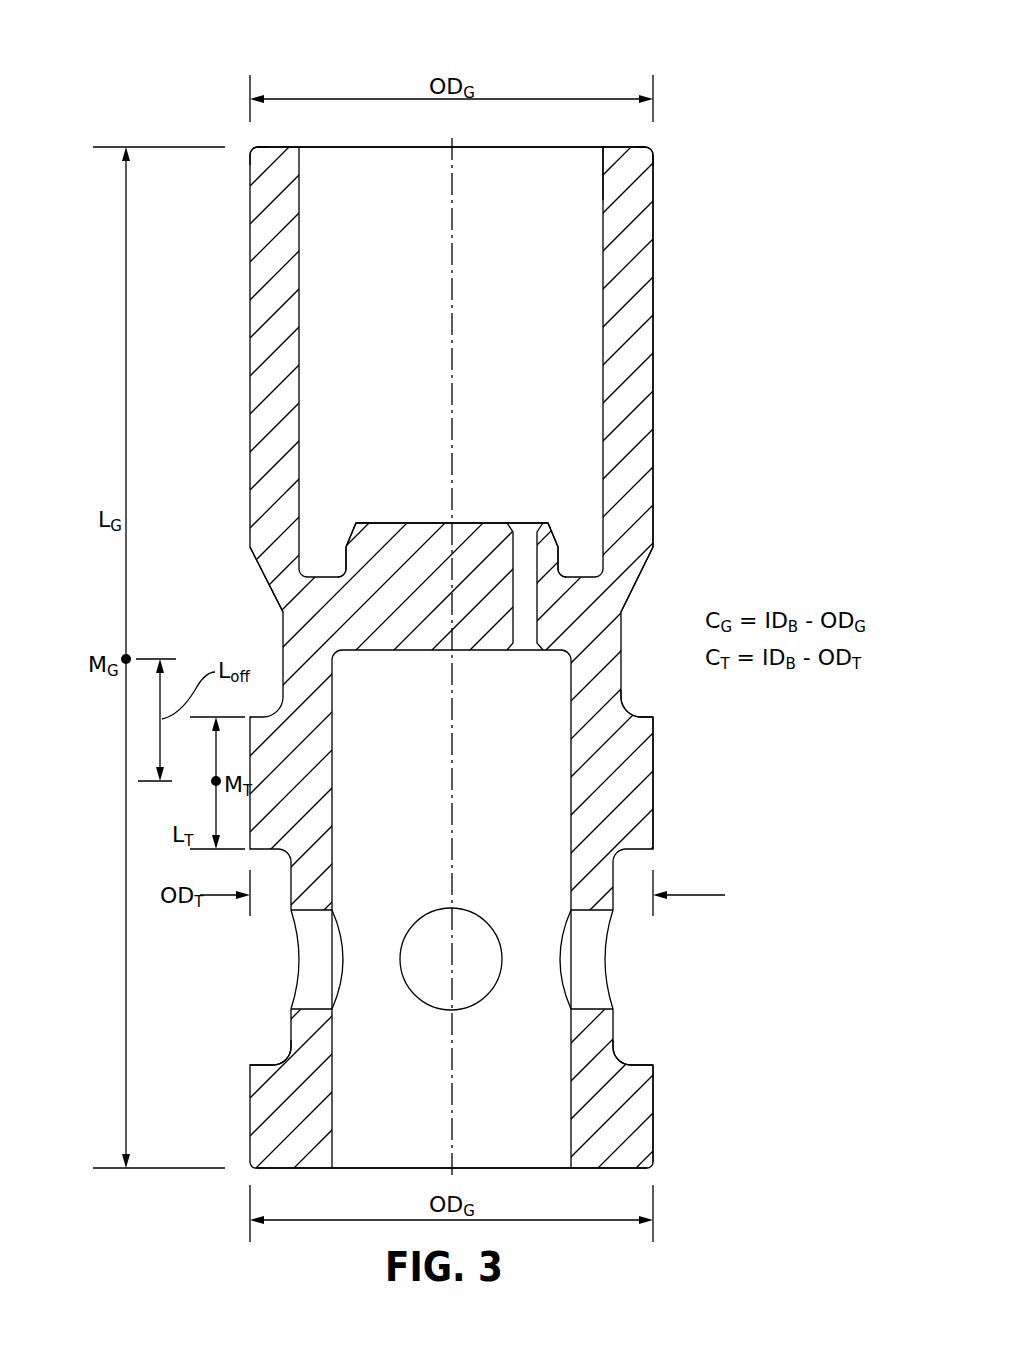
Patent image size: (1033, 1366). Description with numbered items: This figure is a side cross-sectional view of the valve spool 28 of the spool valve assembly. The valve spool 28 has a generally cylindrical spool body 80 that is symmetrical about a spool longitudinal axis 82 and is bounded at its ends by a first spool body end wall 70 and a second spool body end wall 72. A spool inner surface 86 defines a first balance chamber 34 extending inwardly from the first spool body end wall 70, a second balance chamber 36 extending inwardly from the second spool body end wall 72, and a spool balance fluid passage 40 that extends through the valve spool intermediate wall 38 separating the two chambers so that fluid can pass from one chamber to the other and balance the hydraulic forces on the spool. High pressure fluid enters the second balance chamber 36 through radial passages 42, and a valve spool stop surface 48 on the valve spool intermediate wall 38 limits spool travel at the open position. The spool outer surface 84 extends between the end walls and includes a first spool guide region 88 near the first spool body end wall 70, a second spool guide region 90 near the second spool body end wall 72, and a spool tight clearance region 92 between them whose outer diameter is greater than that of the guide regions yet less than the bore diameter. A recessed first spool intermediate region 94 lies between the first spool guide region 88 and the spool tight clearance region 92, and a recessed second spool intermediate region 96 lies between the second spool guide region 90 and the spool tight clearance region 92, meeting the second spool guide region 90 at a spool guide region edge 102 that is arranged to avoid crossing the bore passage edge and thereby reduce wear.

The valve spool 28 is at (140, 60).
The first balance chamber 34 is at (391, 272).
The second balance chamber 36 is at (428, 786).
The valve spool intermediate wall 38 is at (402, 569).
The spool balance fluid passage 40 is at (522, 606).
The radial passages 42 is at (470, 908).
The valve spool stop surface 48 is at (417, 521).
The first spool body end wall 70 is at (333, 147).
The second spool body end wall 72 is at (404, 1170).
The cylindrical spool body 80 is at (252, 147).
The spool longitudinal axis 82 is at (452, 339).
The spool outer surface 84 is at (655, 160).
The spool inner surface 86 is at (603, 177).
The first spool guide region 88 is at (699, 147).
The second spool guide region 90 is at (699, 1065).
The spool tight clearance region 92 is at (699, 717).
The first spool intermediate region 94 is at (623, 700).
The second spool intermediate region 96 is at (614, 1042).
The spool guide region edge 102 is at (251, 1063).